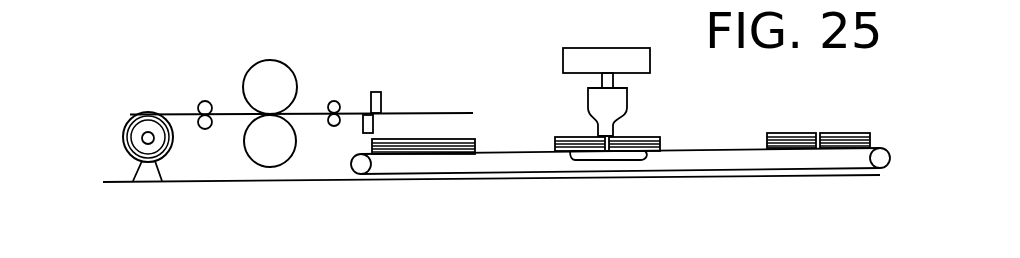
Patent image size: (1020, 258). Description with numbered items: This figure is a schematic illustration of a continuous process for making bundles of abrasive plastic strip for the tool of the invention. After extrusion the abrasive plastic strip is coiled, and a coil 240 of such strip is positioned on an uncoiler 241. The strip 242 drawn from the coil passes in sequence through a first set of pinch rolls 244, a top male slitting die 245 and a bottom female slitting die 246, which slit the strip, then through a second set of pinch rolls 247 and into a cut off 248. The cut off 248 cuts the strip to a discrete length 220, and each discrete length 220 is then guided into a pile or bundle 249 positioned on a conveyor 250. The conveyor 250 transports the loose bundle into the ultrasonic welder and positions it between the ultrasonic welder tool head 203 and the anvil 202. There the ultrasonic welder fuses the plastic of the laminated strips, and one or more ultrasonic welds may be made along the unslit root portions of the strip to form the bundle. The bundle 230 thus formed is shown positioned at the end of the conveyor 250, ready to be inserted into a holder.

The coil 240 is at (147, 112).
The uncoiler 241 is at (130, 155).
The strip 242 is at (173, 112).
The pinch rolls 244 is at (203, 106).
The top male slitting die 245 is at (270, 73).
The bottom female slitting die 246 is at (283, 140).
The pinch rolls 247 is at (332, 105).
The cut off 248 is at (382, 102).
The discrete length 220 is at (443, 113).
The pile or bundle 249 is at (457, 137).
The conveyor 250 is at (556, 140).
The ultrasonic welder tool head 203 is at (615, 100).
The anvil 202 is at (641, 158).
The bundle 230 is at (838, 127).